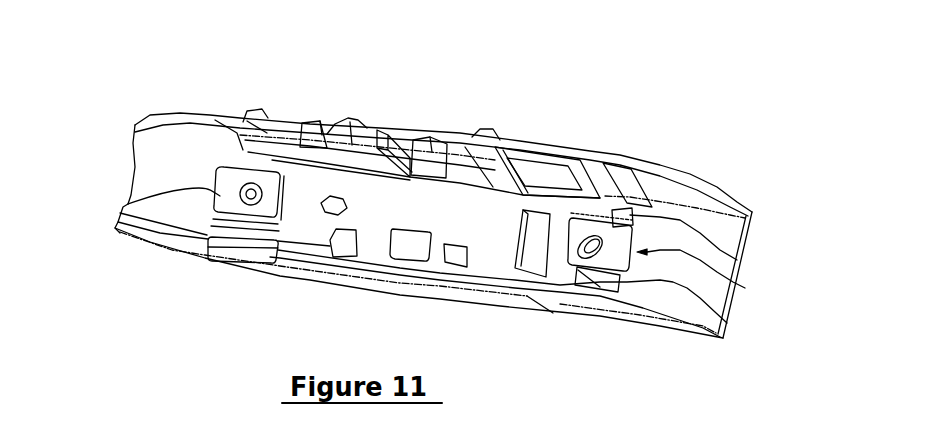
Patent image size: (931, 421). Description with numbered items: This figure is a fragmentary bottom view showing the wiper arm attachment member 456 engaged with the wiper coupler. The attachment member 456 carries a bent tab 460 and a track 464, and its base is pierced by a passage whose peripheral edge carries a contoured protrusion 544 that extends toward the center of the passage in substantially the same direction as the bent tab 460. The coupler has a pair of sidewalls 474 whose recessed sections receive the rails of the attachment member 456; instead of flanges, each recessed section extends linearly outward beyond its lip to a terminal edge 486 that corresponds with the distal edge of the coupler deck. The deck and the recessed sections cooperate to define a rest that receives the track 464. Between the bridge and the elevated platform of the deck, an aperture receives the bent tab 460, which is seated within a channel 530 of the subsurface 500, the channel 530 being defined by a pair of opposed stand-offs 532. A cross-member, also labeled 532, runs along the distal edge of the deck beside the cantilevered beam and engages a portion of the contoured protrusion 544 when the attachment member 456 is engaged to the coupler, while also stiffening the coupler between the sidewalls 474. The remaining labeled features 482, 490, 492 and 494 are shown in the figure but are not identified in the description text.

The wiper arm attachment member 456 is at (147, 90).
The track 464 is at (108, 150).
The terminal edge 486 is at (215, 120).
The retention tab 482 is at (250, 118).
The locating tab 490 is at (303, 130).
The latch tab 494 is at (367, 137).
The guide block 492 is at (432, 150).
The sidewalls 474 is at (531, 81).
The bent tab 460 is at (633, 213).
The subsurface 500 is at (755, 219).
The stand-off 532 is at (752, 253).
The channel 530 is at (745, 288).
The contoured protrusion 544 is at (123, 207).